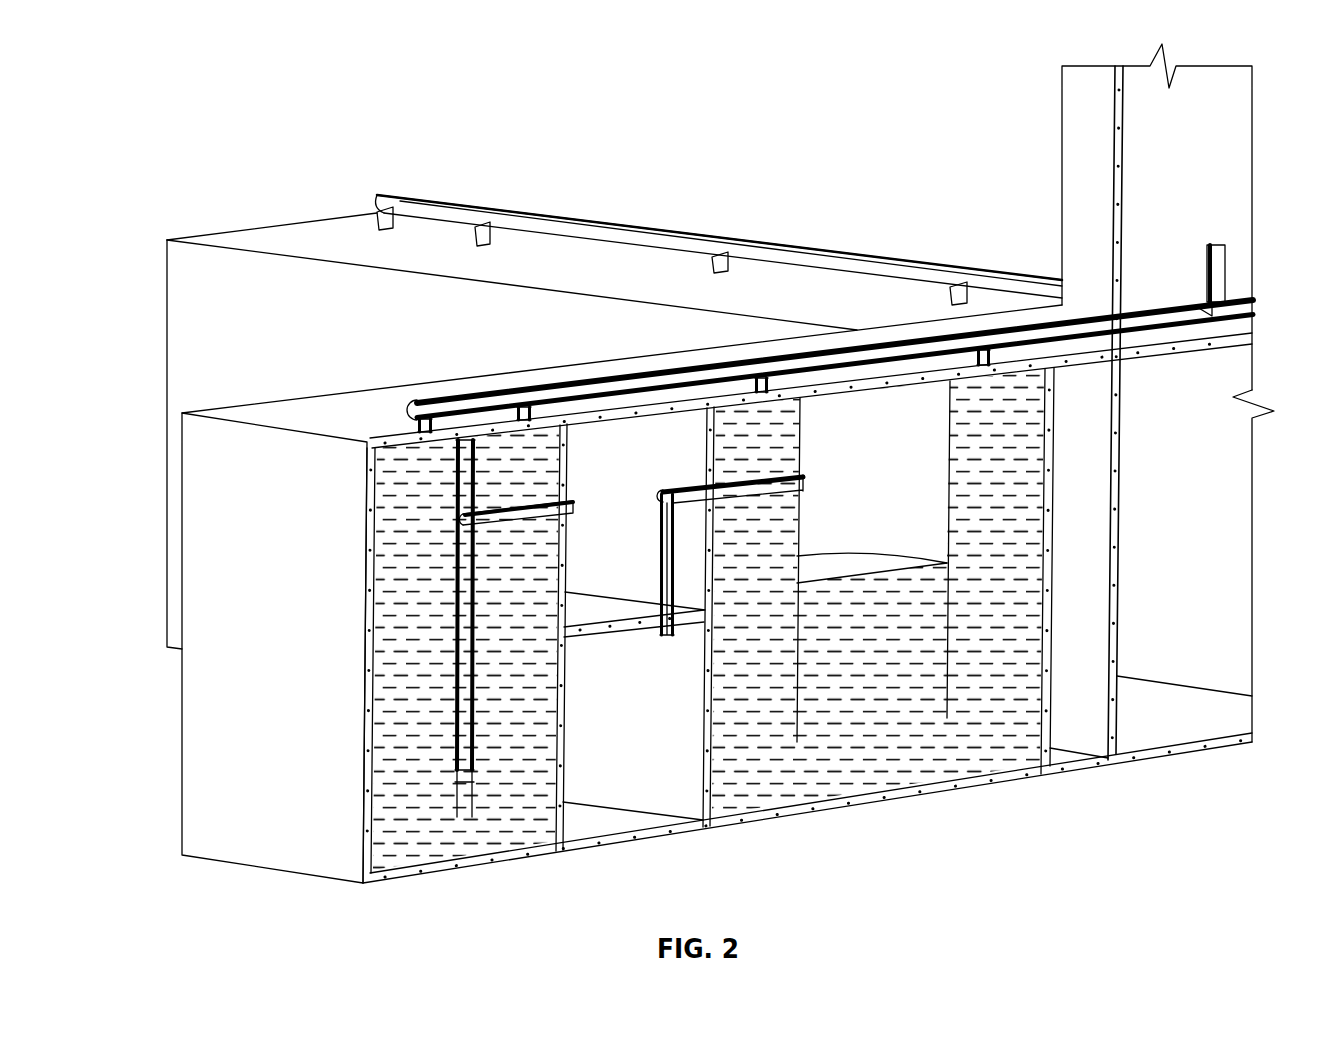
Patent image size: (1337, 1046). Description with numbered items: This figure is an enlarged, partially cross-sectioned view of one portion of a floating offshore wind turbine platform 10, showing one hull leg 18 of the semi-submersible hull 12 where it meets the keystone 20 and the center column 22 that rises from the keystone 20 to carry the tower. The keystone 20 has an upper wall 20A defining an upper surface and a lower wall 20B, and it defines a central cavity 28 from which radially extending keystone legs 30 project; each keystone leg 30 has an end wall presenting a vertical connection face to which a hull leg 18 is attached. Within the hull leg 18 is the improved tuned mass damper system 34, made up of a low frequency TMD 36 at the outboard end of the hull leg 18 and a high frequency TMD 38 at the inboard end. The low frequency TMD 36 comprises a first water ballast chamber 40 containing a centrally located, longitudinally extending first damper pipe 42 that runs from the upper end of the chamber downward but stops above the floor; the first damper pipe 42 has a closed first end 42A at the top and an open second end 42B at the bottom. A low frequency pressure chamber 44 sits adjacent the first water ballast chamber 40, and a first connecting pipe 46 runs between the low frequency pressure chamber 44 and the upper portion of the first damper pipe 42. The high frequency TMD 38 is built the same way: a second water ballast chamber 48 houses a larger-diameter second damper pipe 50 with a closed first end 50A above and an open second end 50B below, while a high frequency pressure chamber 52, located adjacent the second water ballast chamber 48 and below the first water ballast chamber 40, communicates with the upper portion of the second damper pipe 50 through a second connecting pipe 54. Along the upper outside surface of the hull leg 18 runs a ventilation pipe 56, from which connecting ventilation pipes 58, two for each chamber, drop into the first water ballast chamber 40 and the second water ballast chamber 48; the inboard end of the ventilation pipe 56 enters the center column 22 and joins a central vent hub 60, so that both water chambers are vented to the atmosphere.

The FOWT platform 10 is at (343, 92).
The hull 12 is at (221, 227).
The hull leg 18 is at (172, 262).
The keystone 20 is at (1233, 754).
The upper wall 20A is at (1247, 340).
The lower wall 20B is at (1247, 736).
The center column 22 is at (1072, 100).
The central cavity 28 is at (1228, 590).
The keystone leg 30 is at (1057, 765).
The tuned mass damper system 34 is at (546, 212).
The low frequency TMD 36 is at (434, 877).
The high frequency TMD 38 is at (916, 806).
The first water ballast chamber 40 is at (467, 838).
The first damper pipe 42 is at (455, 670).
The closed first end 42A is at (455, 452).
The open second end 42B is at (455, 790).
The low frequency pressure chamber 44 is at (620, 435).
The first connecting pipe 46 is at (545, 527).
The second water ballast chamber 48 is at (777, 777).
The second damper pipe 50 is at (800, 415).
The closed first end 50A is at (965, 352).
The open second end 50B is at (950, 695).
The high frequency pressure chamber 52 is at (640, 793).
The second connecting pipe 54 is at (658, 522).
The ventilation pipe 56 is at (690, 243).
The connecting ventilation pipe 58 is at (370, 218).
The central vent hub 60 is at (1226, 272).